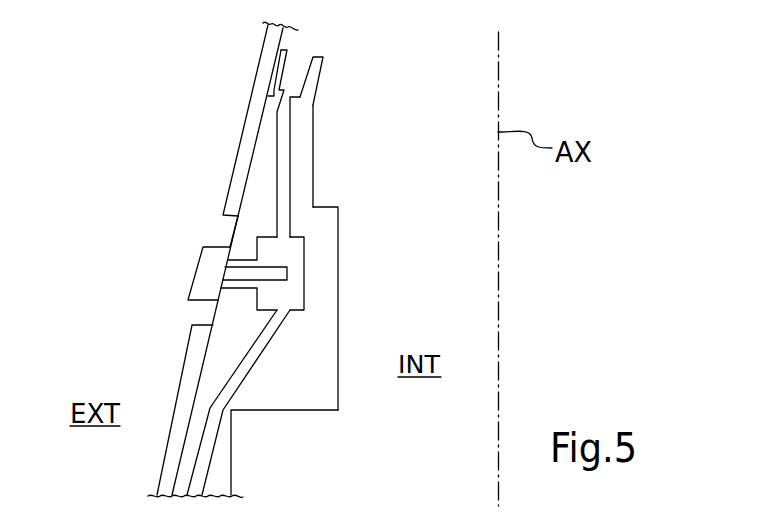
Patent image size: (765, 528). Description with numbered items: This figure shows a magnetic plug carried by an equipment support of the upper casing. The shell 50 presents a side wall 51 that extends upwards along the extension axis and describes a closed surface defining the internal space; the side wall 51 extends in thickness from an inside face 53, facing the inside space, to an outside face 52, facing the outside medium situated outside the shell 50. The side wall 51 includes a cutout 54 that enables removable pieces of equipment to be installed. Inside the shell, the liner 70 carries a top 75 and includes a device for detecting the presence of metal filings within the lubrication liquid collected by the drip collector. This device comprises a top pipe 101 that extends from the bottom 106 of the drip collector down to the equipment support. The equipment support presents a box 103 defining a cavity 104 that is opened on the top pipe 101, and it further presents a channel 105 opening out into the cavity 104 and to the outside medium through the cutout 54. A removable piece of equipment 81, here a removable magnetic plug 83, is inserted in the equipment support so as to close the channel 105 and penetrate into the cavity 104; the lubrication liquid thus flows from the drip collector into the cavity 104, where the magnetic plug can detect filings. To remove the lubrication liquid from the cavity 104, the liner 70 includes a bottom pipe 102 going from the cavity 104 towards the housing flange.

The shell 50 is at (238, 153).
The side wall 51 is at (247, 117).
The outside face 52 is at (220, 177).
The inside face 53 is at (272, 101).
The cutout 54 is at (228, 233).
The liner 70 is at (231, 448).
The top 75 is at (320, 85).
The piece of equipment 81 is at (146, 249).
The removable magnetic plug 83 is at (174, 250).
The top pipe 101 is at (293, 115).
The bottom pipe 102 is at (265, 350).
The box 103 is at (338, 223).
The cavity 104 is at (285, 248).
The channel 105 is at (243, 288).
The bottom 106 is at (302, 148).